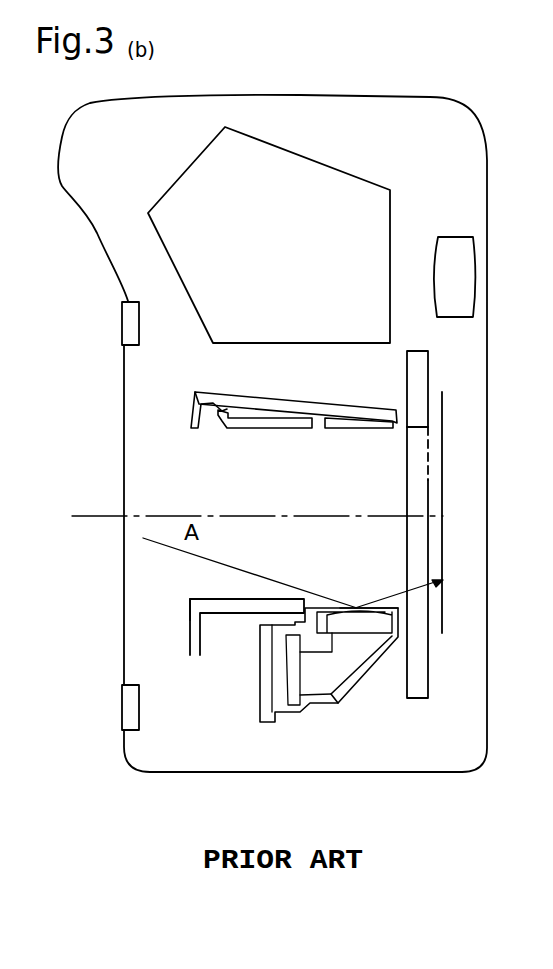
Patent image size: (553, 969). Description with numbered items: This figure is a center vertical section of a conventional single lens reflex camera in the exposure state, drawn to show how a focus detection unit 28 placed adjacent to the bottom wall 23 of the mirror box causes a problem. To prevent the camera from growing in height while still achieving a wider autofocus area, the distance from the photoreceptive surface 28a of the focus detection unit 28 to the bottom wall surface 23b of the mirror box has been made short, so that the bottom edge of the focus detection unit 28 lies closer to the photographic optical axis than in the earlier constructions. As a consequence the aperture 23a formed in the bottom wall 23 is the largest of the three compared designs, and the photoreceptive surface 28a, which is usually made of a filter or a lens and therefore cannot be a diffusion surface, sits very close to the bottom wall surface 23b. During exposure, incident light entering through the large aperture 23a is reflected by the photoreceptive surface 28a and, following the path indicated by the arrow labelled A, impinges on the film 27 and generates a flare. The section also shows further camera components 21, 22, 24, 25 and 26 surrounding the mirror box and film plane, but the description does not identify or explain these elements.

The photographing lens 21 is at (304, 410).
The lens barrel / lens holding frame 22 is at (259, 416).
The bottom wall 23 is at (230, 608).
The aperture 23a is at (334, 588).
The bottom wall surface 23b is at (210, 597).
The grip / battery chamber 24 is at (311, 157).
The eyepiece window 25 is at (460, 253).
The display panel 26 is at (417, 363).
The film 27 is at (443, 406).
The focus detection unit 28 is at (353, 707).
The photoreceptive surface 28a is at (378, 607).